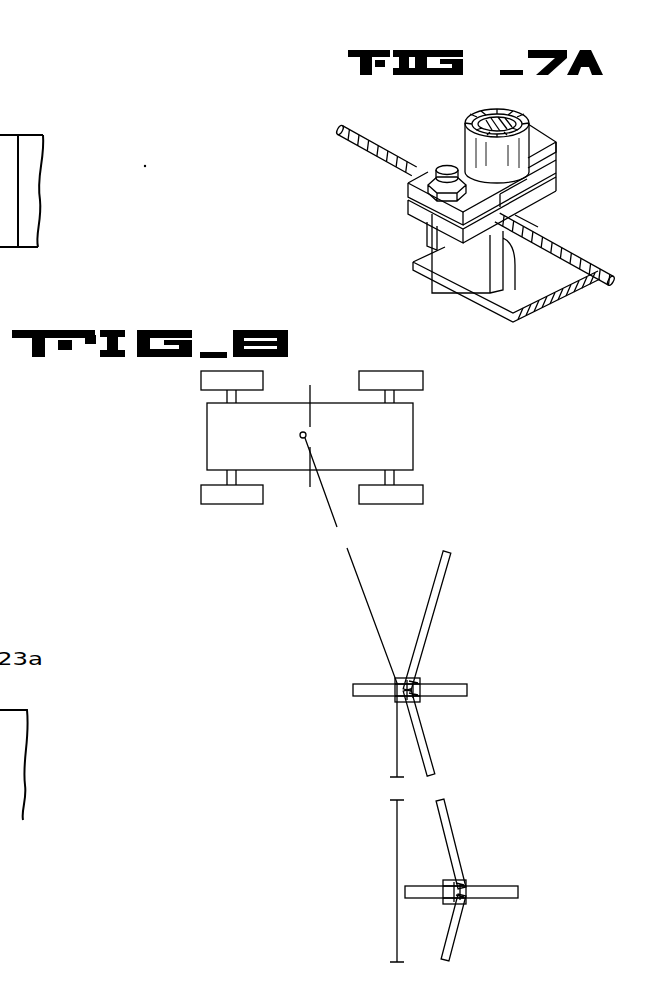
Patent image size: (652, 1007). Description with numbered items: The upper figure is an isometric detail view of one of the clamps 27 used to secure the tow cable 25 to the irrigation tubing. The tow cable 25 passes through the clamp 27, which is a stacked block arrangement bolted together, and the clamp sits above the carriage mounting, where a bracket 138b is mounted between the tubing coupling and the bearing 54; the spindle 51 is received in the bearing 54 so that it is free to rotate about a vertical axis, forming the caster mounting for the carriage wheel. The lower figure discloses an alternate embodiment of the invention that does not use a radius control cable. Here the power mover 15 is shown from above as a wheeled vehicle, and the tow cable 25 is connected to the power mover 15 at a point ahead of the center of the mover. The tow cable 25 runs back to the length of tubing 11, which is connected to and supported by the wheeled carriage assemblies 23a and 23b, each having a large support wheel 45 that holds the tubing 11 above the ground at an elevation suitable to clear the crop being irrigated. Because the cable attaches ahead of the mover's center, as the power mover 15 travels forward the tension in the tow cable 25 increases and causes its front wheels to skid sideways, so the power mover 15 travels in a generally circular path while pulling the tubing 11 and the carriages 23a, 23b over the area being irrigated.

In FIG. 7A, the tow cable 25 is at (336, 133).
In FIG. 8, the tow cable 25 is at (347, 550).
In FIG. 7A, the spindle 51 is at (471, 119).
In FIG. 7A, the bearing 54 is at (466, 141).
In FIG. 7A, the bracket 138b is at (545, 133).
In FIG. 7A, the clamp 27 is at (540, 188).
In FIG. 8, the power mover 15 is at (203, 434).
In FIG. 8, the tubing 11 is at (456, 806).
In FIG. 8, the support wheel 45 is at (357, 689).
In FIG. 8, the leading carriage assembly 23b is at (430, 672).
In FIG. 8, the carriage assembly 23a is at (476, 878).